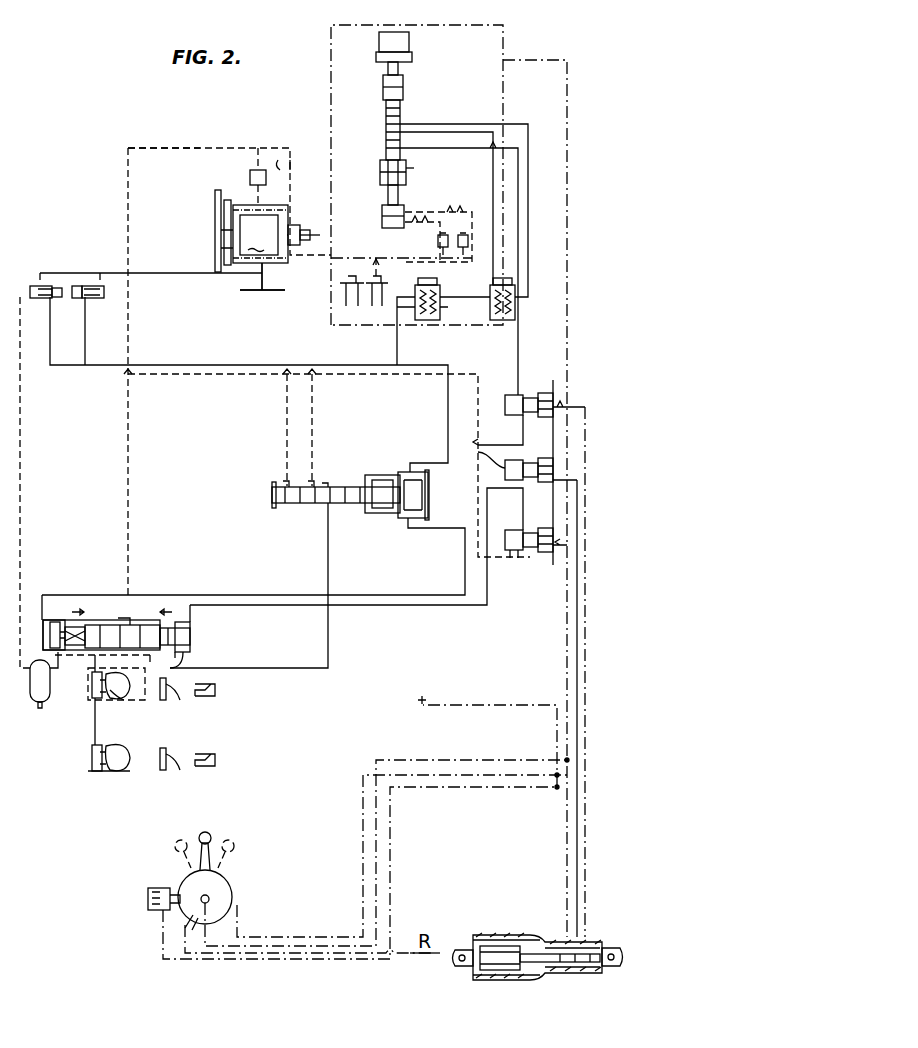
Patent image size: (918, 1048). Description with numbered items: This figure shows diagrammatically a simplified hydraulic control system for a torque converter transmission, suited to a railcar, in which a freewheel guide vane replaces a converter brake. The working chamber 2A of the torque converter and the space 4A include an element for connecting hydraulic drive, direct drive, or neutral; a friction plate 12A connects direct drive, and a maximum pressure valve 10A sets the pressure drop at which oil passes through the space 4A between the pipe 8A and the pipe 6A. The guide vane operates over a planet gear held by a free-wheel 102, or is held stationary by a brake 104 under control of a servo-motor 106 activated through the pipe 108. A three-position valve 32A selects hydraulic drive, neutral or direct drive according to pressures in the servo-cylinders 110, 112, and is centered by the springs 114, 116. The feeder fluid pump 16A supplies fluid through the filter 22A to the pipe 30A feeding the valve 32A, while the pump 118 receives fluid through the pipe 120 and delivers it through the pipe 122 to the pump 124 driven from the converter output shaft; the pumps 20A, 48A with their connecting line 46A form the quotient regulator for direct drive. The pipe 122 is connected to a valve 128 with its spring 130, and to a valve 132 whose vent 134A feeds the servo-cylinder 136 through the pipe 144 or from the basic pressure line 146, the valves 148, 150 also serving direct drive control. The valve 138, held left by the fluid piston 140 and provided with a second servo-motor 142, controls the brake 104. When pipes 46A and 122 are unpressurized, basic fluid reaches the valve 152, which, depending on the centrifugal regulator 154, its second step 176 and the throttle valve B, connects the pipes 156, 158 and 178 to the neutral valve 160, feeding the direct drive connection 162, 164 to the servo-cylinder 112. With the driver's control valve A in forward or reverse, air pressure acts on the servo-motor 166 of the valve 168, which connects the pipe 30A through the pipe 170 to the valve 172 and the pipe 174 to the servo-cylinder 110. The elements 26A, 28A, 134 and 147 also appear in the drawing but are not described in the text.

The pipe 30A is at (128, 180).
The filter 22A is at (250, 175).
The pipe 120 is at (279, 158).
The pump 118 is at (293, 225).
The feeder fluid pump 16A is at (251, 231).
The pump 20A is at (308, 232).
The pipe 122 is at (290, 280).
The brake valve 26A is at (38, 288).
The brake valve 28A is at (98, 288).
The valve 152 is at (386, 146).
The centrifugal regulator 154 is at (380, 175).
The second centrifugal regulator step 176 is at (408, 164).
The pump 124 is at (396, 212).
The pipe 158 is at (514, 125).
The pipe 178 is at (518, 158).
The pipe 156 is at (489, 175).
The pump 48A is at (388, 228).
The connecting line 46A is at (425, 232).
The valve 128 is at (342, 283).
The valve 148 is at (376, 283).
The spring 130 is at (350, 296).
The valve 150 is at (412, 298).
The valve 132 is at (490, 298).
The valve spring 134 is at (440, 290).
The vent 134A is at (475, 282).
The basic pressure line 146 is at (398, 340).
The line 147 is at (448, 332).
The neutral valve 160 is at (535, 394).
The direct drive pipe connection 162 is at (522, 418).
The pipe 170 is at (510, 490).
The valve 172 is at (478, 452).
The servo-motor 166 is at (545, 553).
The valve 168 is at (510, 551).
The pipe 144 is at (448, 396).
The fluid piston 140 is at (305, 502).
The valve 138 is at (361, 505).
The second servo-motor 142 is at (386, 474).
The servo-cylinder 136 is at (408, 518).
The pipe 164 is at (372, 600).
The pipe 174 is at (463, 606).
The pipe 108 is at (310, 668).
The valve 32A is at (130, 620).
The servo-cylinder 112 is at (65, 625).
The spring 116 is at (80, 628).
The servo-cylinder 110 is at (188, 632).
The spring 114 is at (184, 649).
The pipe 8A is at (92, 678).
The pipe 6A is at (144, 700).
The maximum pressure valve 10A is at (104, 698).
The servo-motor 106 is at (174, 694).
The free-wheel 102 is at (200, 752).
The friction plate 12A is at (92, 757).
The working chamber 2A is at (128, 750).
The space 4A is at (106, 756).
The brake 104 is at (172, 752).
The driver's control valve A is at (232, 886).
The throttle valve B is at (490, 978).